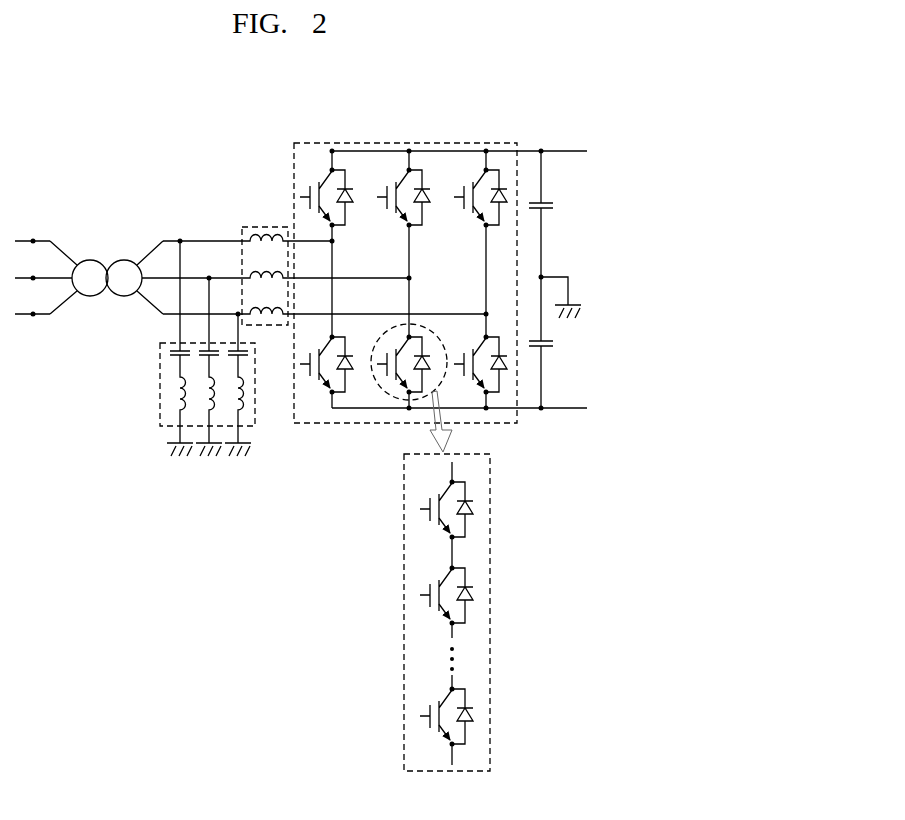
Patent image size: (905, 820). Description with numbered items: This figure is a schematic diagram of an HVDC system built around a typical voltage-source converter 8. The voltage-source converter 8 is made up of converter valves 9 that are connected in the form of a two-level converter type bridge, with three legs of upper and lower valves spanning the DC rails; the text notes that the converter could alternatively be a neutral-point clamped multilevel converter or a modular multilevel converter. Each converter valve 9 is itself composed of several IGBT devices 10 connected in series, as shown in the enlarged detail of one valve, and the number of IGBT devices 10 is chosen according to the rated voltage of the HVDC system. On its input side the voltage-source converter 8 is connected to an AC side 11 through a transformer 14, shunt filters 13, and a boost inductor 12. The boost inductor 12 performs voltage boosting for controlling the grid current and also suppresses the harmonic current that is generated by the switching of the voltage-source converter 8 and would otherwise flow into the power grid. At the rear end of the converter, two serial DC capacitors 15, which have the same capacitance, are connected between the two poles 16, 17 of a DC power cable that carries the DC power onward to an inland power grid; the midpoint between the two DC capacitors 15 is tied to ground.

The voltage-source converter 8 is at (410, 273).
The converter valve 9 is at (353, 219).
The IGBT device 10 is at (424, 534).
The AC side 11 is at (42, 231).
The boost inductor 12 is at (254, 224).
The shunt filter 13 is at (157, 385).
The transformer 14 is at (105, 254).
The DC capacitor 15 is at (554, 216).
The pole 16 is at (566, 149).
The pole 17 is at (558, 413).